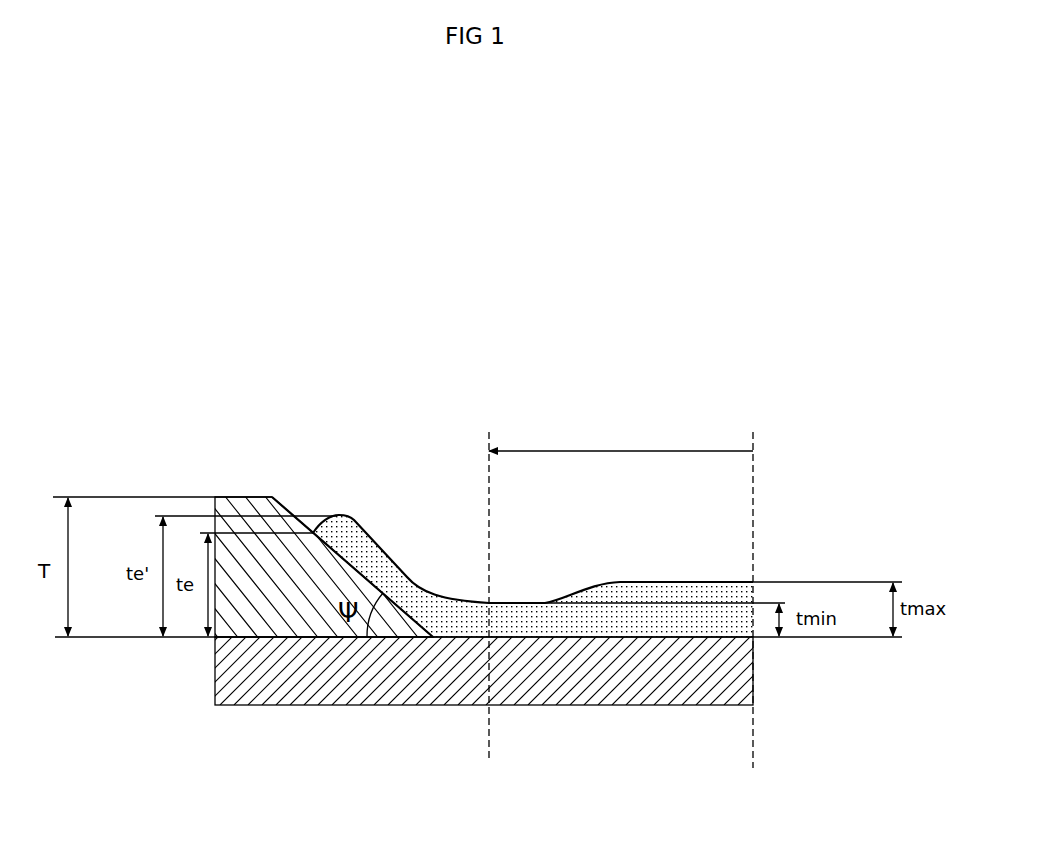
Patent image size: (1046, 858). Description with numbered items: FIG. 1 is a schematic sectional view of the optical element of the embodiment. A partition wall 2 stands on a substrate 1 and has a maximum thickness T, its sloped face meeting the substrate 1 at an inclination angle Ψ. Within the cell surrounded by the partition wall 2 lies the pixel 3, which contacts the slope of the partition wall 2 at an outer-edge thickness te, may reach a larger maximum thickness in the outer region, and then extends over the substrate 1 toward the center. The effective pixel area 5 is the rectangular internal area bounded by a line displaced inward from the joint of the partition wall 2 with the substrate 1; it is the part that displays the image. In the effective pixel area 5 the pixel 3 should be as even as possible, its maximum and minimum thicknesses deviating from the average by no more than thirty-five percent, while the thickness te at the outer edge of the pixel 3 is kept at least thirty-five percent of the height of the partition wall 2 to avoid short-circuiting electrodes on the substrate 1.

The substrate 1 is at (400, 680).
The partition wall 2 is at (275, 595).
The pixel 3 is at (620, 622).
The effective pixel area 5 is at (622, 450).